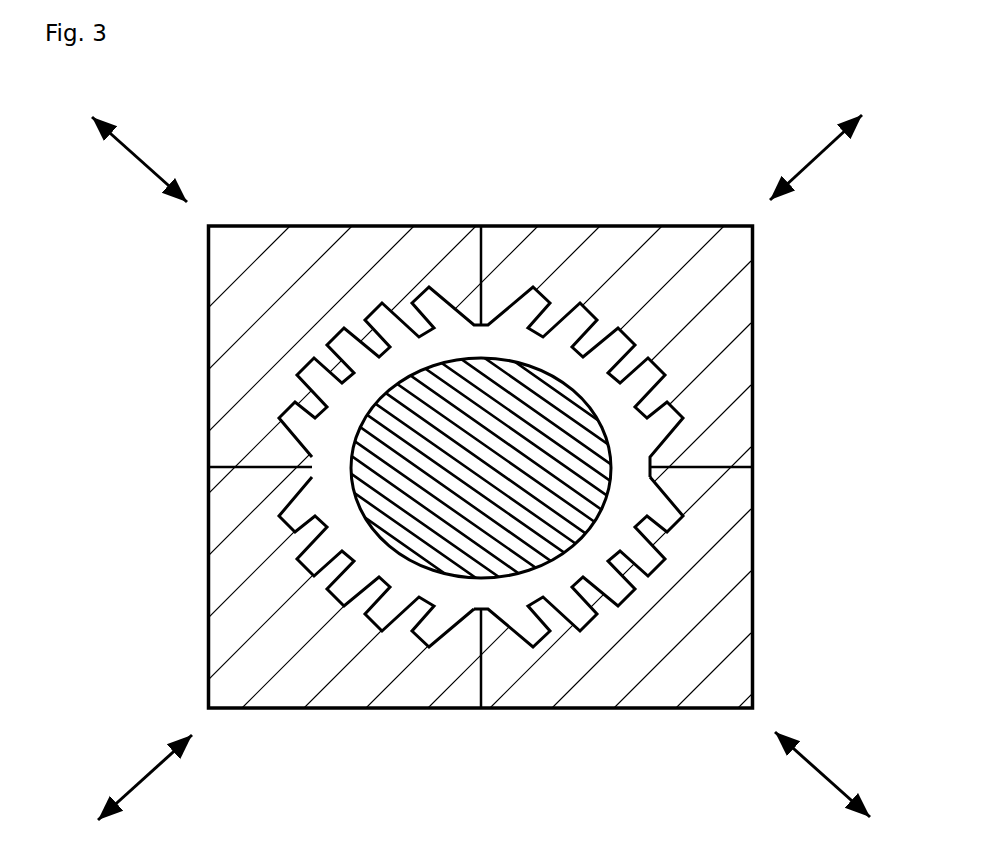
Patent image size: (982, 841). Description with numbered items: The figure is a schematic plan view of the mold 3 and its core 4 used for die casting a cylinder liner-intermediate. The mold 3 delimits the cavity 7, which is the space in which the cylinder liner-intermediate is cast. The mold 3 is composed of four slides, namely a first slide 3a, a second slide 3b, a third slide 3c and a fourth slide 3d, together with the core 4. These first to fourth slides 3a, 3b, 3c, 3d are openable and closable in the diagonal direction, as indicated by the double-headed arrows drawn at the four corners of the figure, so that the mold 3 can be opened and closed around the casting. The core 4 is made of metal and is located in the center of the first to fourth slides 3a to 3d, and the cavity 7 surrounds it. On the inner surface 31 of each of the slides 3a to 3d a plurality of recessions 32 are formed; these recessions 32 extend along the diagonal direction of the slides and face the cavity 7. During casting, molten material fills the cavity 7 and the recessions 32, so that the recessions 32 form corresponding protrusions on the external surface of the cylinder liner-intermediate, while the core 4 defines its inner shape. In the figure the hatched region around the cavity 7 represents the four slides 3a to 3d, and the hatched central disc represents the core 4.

The mold 3 is at (471, 436).
The first slide 3a is at (237, 367).
The second slide 3b is at (415, 512).
The third slide 3c is at (717, 350).
The fourth slide 3d is at (720, 572).
The core 4 is at (402, 484).
The cavity 7 is at (492, 456).
The inner surface 31 is at (538, 598).
The recessions 32 is at (427, 628).